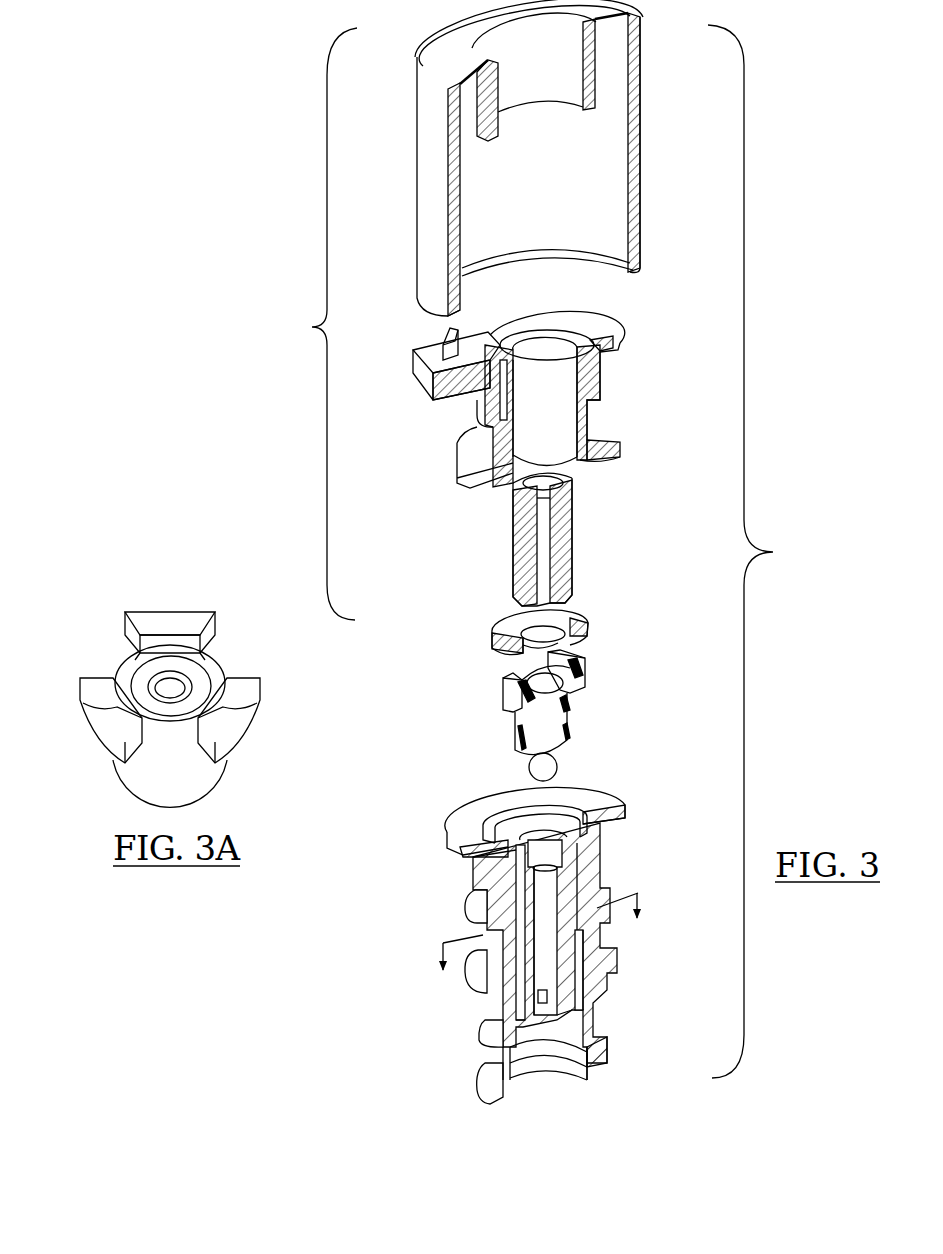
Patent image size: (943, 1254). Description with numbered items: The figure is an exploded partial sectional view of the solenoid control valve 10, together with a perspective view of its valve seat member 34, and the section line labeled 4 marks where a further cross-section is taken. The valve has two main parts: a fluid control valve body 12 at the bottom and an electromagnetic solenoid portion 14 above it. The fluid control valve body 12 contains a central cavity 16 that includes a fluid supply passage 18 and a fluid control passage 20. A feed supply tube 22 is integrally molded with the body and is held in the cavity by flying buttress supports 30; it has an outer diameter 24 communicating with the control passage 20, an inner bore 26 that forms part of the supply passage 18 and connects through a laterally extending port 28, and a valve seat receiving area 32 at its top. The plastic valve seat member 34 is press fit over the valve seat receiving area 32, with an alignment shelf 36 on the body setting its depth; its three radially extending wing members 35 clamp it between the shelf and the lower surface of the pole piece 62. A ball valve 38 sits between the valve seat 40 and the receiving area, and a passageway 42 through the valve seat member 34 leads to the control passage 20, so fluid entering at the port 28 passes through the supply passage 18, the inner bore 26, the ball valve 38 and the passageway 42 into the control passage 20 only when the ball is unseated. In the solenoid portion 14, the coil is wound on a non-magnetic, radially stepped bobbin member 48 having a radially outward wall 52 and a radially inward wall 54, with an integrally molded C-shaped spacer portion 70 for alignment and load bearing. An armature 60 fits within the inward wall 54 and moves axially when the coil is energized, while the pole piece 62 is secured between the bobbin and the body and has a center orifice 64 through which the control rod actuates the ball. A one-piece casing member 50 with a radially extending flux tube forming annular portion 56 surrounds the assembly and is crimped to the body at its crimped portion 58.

In FIG. 3, the solenoid control valve 10 is at (756, 551).
In FIG. 3, the fluid control valve body 12 is at (498, 944).
In FIG. 3, the electromagnetic solenoid portion 14 is at (313, 324).
In FIG. 3, the central cavity 16 is at (607, 1069).
In FIG. 3, the fluid supply passage 18 is at (474, 1008).
In FIG. 3, the fluid control passage 20 is at (534, 1078).
In FIG. 3, the feed supply tube 22 is at (623, 970).
In FIG. 3, the outer diameter 24 is at (605, 1016).
In FIG. 3, the inner bore 26 is at (585, 941).
In FIG. 3, the laterally extending port 28 is at (475, 1033).
In FIG. 3, the flying buttress supports 30 is at (467, 891).
In FIG. 3, the valve seat receiving area 32 is at (569, 807).
In FIG. 3, the valve seat member 34 is at (582, 703).
In FIG. 3A, the valve seat member 34 is at (198, 680).
In FIG. 3, the wing members 35 is at (594, 641).
In FIG. 3A, the wing members 35 is at (170, 654).
In FIG. 3, the alignment shelf 36 is at (590, 842).
In FIG. 3, the ball valve 38 is at (575, 764).
In FIG. 3, the valve seat 40 is at (506, 707).
In FIG. 3A, the valve seat 40 is at (143, 643).
In FIG. 3, the passageway 42 is at (483, 683).
In FIG. 3A, the passageway 42 is at (168, 707).
In FIG. 3, the bobbin member 48 is at (427, 368).
In FIG. 3, the casing member 50 is at (501, 158).
In FIG. 3, the radially outward wall 52 is at (551, 382).
In FIG. 3, the radially inward wall 54 is at (569, 450).
In FIG. 3, the flux tube forming annular portion 56 is at (591, 80).
In FIG. 3, the crimped portion 58 is at (396, 293).
In FIG. 3, the armature 60 is at (576, 539).
In FIG. 3, the pole piece 62 is at (475, 630).
In FIG. 3, the center orifice 64 is at (566, 623).
In FIG. 3, the spacer portion 70 is at (542, 315).
In FIG. 3, the section line 4- 4 is at (540, 951).